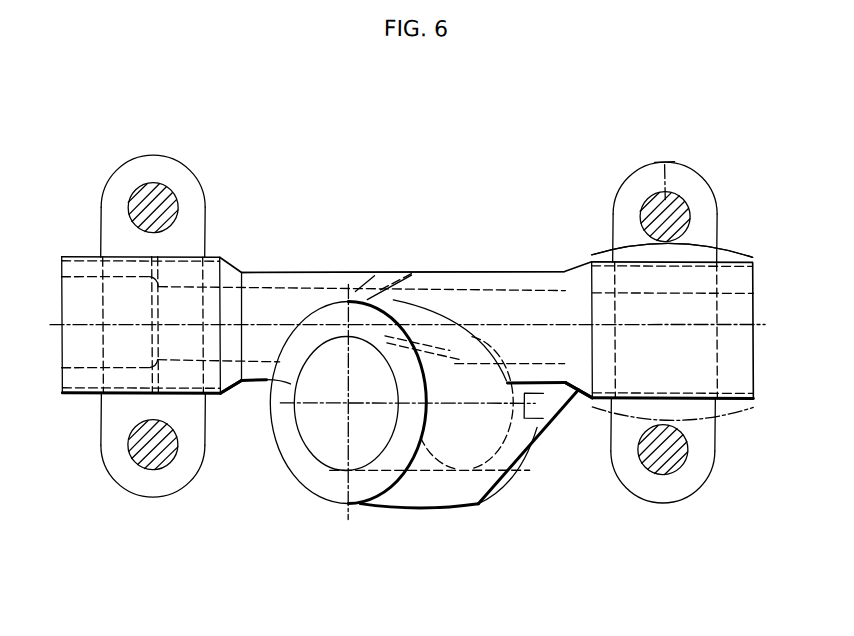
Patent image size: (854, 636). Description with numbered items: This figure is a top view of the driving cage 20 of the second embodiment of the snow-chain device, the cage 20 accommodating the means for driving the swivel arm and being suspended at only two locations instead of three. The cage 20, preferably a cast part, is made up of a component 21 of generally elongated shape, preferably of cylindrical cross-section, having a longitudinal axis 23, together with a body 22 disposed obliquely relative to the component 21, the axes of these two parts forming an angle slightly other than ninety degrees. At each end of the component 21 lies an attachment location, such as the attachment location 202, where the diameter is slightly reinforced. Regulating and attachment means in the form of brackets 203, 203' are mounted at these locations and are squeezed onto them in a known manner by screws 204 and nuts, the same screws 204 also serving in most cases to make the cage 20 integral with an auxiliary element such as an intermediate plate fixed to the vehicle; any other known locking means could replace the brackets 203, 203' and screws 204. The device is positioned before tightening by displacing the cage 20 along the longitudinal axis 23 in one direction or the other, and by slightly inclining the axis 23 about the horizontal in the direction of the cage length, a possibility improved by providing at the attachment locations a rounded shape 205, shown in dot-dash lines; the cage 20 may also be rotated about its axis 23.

The driving cage 20 is at (246, 265).
The component 21 is at (492, 270).
The body 22 is at (330, 503).
The longitudinal axis 23 is at (303, 283).
The attachment location 202 is at (219, 404).
The bracket 203 is at (686, 205).
The bracket 203' is at (188, 207).
The screw 204 is at (665, 160).
The rounded shape 205 is at (604, 246).